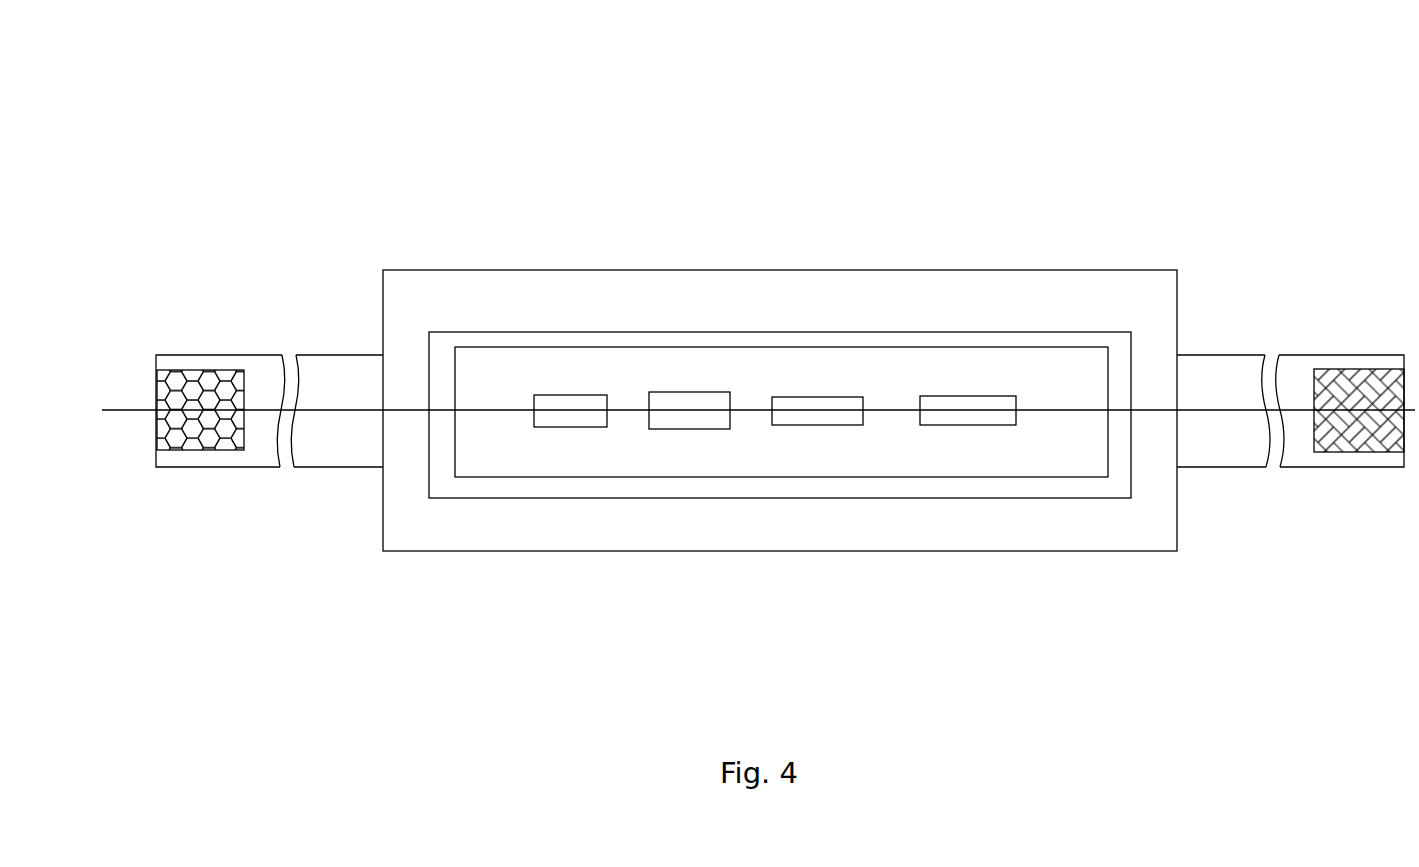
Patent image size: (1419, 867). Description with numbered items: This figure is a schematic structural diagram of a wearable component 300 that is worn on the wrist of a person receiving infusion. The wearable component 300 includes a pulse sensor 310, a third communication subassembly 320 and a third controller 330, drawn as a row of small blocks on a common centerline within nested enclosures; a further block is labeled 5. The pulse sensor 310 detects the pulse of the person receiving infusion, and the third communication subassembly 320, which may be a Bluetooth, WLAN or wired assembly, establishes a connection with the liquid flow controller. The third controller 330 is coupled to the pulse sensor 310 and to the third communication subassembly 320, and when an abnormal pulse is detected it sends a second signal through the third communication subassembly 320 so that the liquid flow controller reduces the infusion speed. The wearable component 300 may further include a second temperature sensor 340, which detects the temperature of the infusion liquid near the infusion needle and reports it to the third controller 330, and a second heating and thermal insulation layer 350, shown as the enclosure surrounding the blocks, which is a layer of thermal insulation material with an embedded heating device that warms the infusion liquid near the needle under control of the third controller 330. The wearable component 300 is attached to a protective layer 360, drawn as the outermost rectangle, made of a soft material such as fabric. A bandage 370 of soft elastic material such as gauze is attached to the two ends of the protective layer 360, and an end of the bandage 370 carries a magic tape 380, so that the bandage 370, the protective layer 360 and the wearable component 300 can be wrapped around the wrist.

The wearable component 300 is at (243, 116).
The pulse sensor 310 is at (682, 402).
The third communication subassembly 320 is at (540, 408).
The third controller 330 is at (812, 400).
The second temperature sensor 340 is at (963, 398).
The second heating and thermal insulation layer 350 is at (557, 332).
The protective layer 360 is at (754, 270).
The bandage 370 is at (1330, 355).
The magic tape 380 is at (190, 392).
The substrate 5 is at (723, 477).